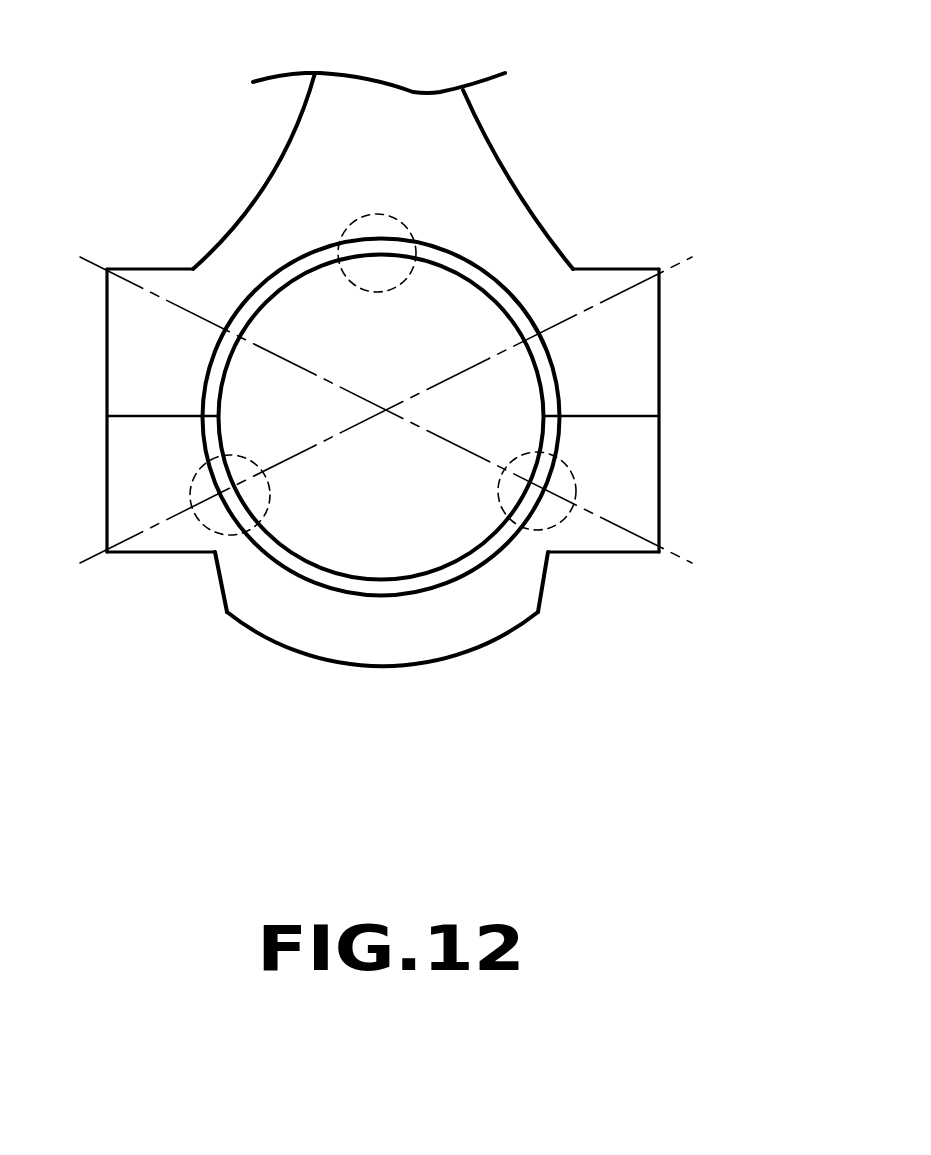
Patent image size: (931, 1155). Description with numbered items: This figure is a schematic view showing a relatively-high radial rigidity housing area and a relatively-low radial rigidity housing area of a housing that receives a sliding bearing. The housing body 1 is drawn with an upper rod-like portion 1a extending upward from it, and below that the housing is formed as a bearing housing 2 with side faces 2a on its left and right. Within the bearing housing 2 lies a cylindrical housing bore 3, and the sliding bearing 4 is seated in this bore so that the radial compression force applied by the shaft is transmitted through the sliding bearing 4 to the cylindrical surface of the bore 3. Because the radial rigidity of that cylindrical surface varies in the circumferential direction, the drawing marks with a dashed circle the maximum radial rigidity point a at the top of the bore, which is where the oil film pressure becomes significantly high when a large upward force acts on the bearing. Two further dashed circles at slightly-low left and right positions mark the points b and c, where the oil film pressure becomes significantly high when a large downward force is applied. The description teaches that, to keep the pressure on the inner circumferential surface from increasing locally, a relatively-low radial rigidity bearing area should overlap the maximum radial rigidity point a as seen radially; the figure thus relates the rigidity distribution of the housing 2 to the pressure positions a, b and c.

The connecting rod 1 is at (572, 164).
The rod portion 1a is at (312, 111).
The big end bearing housing 2 is at (681, 289).
The side face of bearing housing 2a is at (659, 471).
The bearing bore (outer surface of bearing shell) 3 is at (512, 282).
The bearing shell 4 is at (430, 584).
The maximum radial rigidity point a is at (375, 211).
The high oil film pressure position b is at (197, 477).
The high oil film pressure position c is at (567, 473).